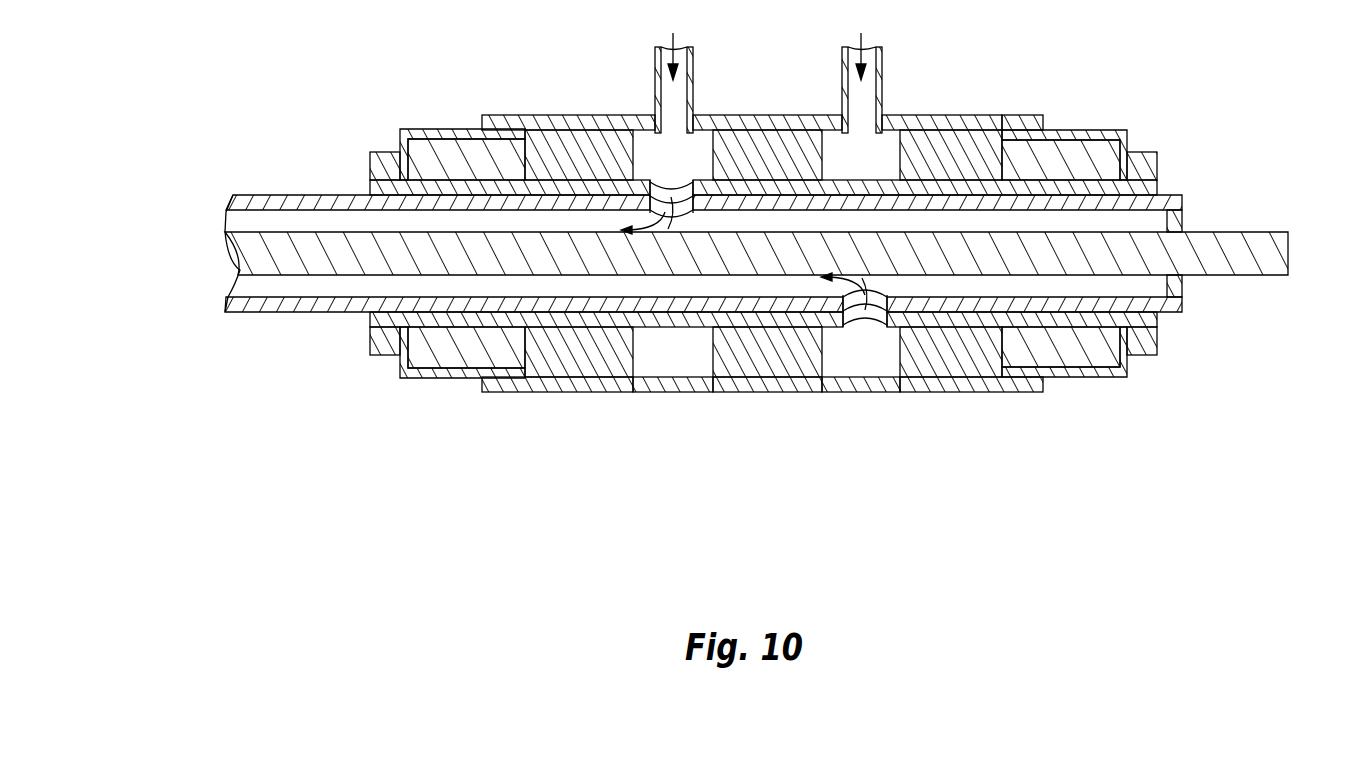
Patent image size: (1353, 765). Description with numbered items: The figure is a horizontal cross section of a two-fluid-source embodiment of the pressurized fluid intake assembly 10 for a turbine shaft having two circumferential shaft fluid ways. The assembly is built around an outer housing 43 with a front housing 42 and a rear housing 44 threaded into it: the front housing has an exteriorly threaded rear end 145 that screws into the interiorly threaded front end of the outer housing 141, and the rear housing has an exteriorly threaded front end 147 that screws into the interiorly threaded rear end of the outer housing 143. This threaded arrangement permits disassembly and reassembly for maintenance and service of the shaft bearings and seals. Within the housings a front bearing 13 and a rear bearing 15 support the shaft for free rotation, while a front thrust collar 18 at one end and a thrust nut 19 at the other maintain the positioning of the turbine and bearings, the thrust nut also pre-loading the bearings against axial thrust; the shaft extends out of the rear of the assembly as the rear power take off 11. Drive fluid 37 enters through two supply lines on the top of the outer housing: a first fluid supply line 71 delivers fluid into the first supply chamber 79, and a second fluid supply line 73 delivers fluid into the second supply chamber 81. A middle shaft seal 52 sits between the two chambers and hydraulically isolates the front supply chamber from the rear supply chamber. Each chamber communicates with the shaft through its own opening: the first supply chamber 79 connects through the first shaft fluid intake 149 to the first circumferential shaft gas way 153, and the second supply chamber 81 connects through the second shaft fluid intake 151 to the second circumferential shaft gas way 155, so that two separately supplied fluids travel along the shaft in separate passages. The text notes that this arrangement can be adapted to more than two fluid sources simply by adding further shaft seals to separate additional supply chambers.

The intake assembly 10 is at (940, 115).
The rear power take off 11 is at (1262, 276).
The front bearing 13 is at (462, 352).
The rear bearing 15 is at (1080, 355).
The front thrust collar 18 is at (370, 163).
The thrust nut 19 is at (1157, 153).
The drive fluid 37 is at (673, 48).
The front housing 42 is at (400, 135).
The outer housing 43 is at (977, 115).
The rear housing 44 is at (1117, 128).
The middle shaft seal 52 is at (762, 362).
The first fluid supply line 71 is at (655, 82).
The second fluid supply line 73 is at (842, 78).
The first supply chamber 79 is at (653, 362).
The second supply chamber 81 is at (874, 360).
The interiorly threaded front end of the outer housing 141 is at (480, 118).
The interiorly threaded rear end of the outer housing 143 is at (1043, 115).
The exteriorly threaded rear end of the front housing 145 is at (519, 357).
The exteriorly threaded front end of the rear housing 147 is at (1000, 360).
The first shaft fluid intake 149 is at (665, 178).
The second shaft fluid intake 151 is at (868, 322).
The first circumferential shaft gas way 153 is at (238, 220).
The second circumferential shaft gas way 155 is at (243, 283).